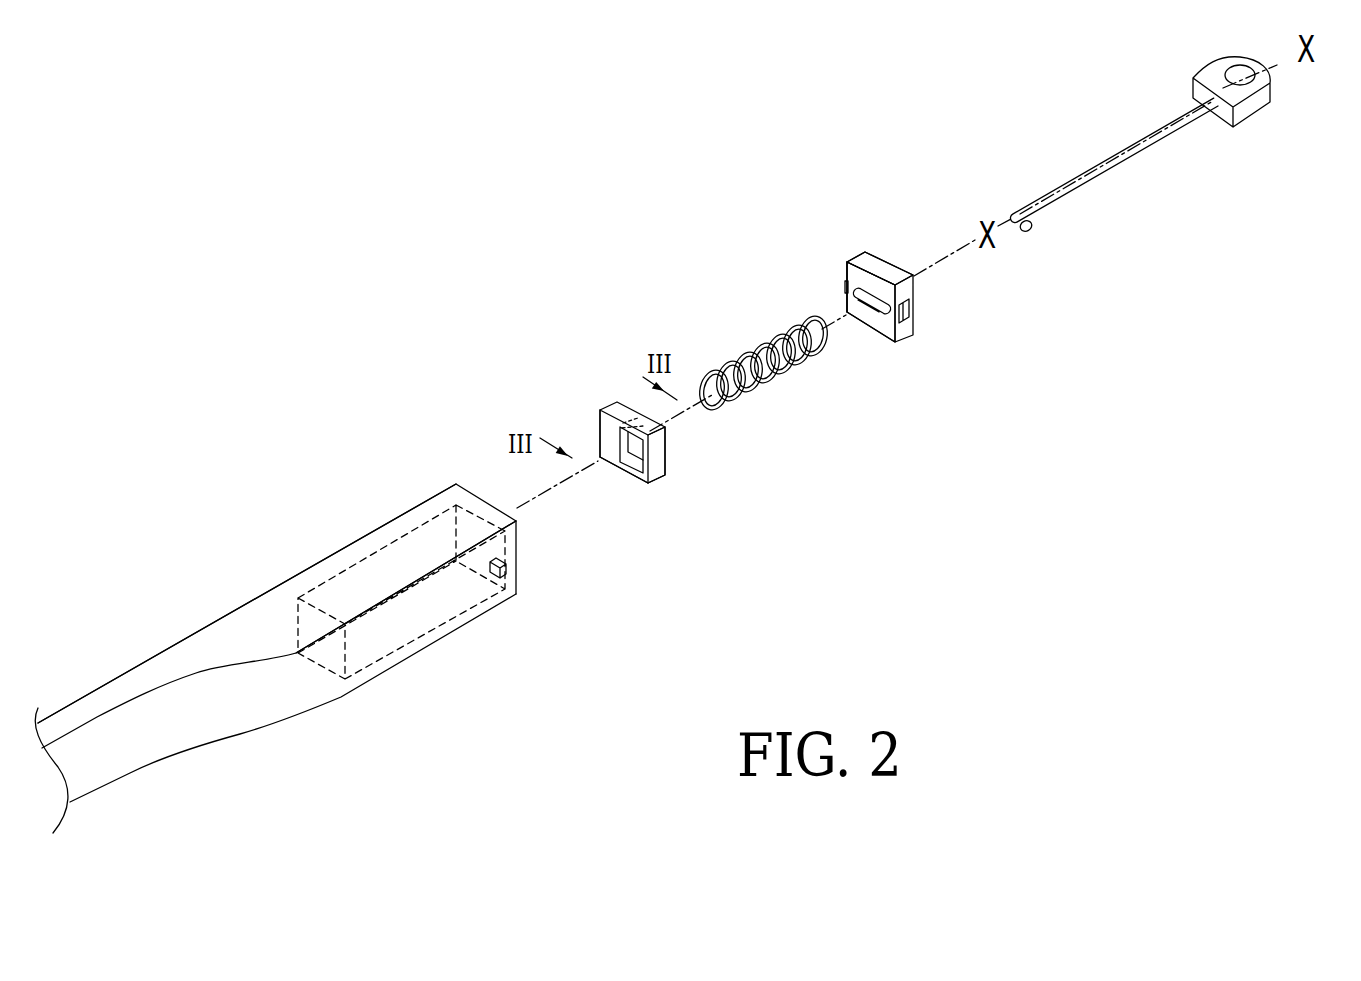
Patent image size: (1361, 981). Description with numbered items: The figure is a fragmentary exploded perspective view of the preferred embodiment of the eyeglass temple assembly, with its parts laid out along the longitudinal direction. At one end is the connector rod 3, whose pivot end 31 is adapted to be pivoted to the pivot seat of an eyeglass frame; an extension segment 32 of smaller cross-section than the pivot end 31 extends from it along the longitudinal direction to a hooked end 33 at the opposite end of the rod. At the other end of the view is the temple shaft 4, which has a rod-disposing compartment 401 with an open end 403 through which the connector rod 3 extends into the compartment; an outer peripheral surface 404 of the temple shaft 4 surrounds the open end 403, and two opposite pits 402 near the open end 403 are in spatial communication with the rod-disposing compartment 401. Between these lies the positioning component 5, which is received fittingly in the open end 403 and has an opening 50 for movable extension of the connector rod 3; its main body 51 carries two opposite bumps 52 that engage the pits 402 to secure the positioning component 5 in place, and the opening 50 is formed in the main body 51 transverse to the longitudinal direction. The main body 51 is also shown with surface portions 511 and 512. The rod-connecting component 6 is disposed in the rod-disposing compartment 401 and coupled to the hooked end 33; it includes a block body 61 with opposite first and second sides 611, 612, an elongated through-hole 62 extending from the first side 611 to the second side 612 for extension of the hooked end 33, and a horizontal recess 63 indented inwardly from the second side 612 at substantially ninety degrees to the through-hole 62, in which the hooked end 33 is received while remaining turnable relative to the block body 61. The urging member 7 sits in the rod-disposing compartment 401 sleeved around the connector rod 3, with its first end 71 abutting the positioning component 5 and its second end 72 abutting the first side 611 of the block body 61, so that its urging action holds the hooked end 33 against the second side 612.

The connector rod 3 is at (1180, 125).
The pivot end 31 is at (1267, 90).
The extension segment 32 is at (1080, 175).
The hooked end 33 is at (1031, 231).
The temple shaft 4 is at (260, 643).
The rod-disposing compartment 401 is at (439, 545).
The pits 402 is at (507, 576).
The open end 403 is at (480, 507).
The outer peripheral surface 404 is at (458, 482).
The positioning component 5 is at (850, 252).
The opening 50 is at (880, 312).
The main body 51 is at (877, 263).
The top surface 511 is at (897, 270).
The side surface 512 is at (865, 278).
The bumps 52 is at (846, 282).
The rod-connecting component 6 is at (597, 387).
The block body 61 is at (613, 402).
The first side 611 is at (621, 408).
The second side 612 is at (607, 427).
The elongated through-hole 62 is at (625, 455).
The horizontal recess 63 is at (632, 458).
The urging member 7 is at (762, 376).
The first end 71 is at (827, 350).
The second end 72 is at (715, 410).